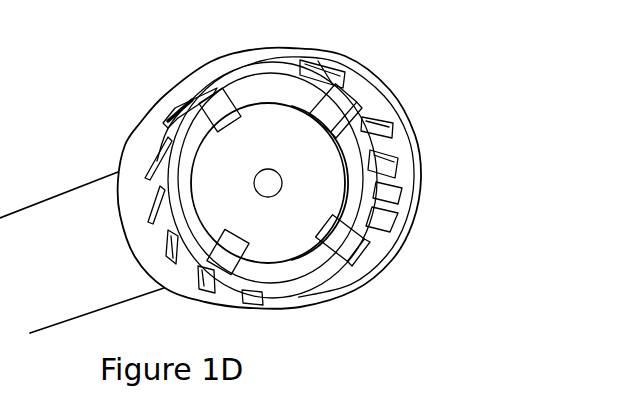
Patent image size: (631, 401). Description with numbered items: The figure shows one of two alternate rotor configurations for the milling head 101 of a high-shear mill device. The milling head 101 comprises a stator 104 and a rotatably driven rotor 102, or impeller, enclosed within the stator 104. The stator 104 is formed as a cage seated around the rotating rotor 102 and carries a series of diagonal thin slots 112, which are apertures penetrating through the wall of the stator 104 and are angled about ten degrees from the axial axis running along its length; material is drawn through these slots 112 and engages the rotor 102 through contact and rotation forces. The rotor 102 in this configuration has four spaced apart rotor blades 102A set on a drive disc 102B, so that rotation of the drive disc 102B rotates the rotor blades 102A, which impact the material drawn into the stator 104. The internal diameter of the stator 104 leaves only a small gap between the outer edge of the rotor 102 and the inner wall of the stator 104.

The milling head 101 is at (439, 243).
The rotor 102 is at (268, 141).
The rotor blades 102A is at (342, 104).
The drive disc 102B is at (283, 225).
The stator 104 is at (162, 228).
The slots 112 is at (152, 205).